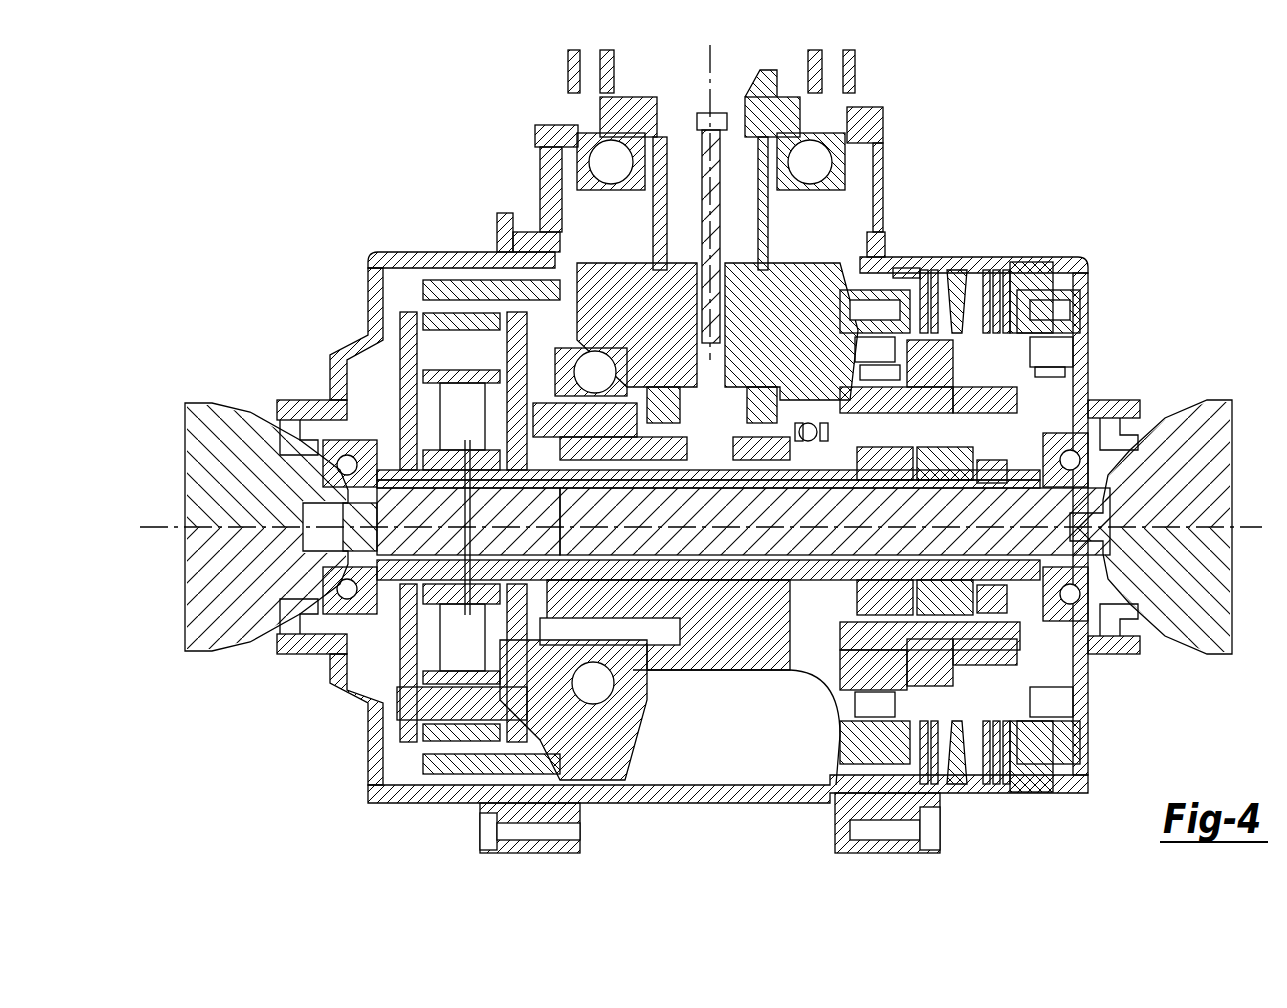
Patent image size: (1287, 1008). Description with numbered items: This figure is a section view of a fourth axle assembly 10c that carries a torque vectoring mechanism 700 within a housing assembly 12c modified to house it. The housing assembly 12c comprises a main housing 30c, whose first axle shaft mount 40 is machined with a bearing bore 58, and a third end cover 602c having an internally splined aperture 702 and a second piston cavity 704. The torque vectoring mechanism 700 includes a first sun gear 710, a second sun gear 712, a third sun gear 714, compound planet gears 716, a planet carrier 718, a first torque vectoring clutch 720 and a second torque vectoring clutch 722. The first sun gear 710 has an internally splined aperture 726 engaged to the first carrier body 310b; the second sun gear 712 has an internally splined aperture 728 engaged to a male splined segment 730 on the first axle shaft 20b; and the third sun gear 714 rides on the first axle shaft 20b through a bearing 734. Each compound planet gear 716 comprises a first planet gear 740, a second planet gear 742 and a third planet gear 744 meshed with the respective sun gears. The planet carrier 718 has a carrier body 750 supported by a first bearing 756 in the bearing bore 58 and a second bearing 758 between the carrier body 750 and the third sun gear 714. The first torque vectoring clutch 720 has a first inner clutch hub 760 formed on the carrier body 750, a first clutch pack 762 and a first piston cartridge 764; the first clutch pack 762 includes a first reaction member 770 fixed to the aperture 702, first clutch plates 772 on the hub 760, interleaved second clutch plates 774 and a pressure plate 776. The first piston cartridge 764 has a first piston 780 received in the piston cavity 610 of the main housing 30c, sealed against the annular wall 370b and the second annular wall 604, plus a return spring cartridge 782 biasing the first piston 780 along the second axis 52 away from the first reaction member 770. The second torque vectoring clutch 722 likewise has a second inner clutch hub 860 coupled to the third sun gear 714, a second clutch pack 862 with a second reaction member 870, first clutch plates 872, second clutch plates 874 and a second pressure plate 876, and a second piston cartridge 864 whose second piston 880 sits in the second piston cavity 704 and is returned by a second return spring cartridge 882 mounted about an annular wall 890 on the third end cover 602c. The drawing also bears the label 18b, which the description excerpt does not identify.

The axle assembly 10c is at (266, 128).
The housing assembly 12c is at (578, 180).
The main housing 30c is at (575, 198).
The planetary gear set 18b is at (410, 308).
The first carrier body 310b is at (505, 445).
The second axis 52 is at (165, 527).
The first axle shaft 20b is at (1190, 628).
The third end cover 602c is at (1080, 405).
The bearing bore 58 is at (755, 365).
The first axle shaft mount 40 is at (770, 655).
The first torque vectoring clutch 720 is at (900, 278).
The first clutch pack 762 is at (938, 275).
The second clutch pack 862 is at (982, 278).
The torque vectoring mechanism 700 is at (1005, 275).
The second torque vectoring clutch 722 is at (1015, 285).
The internally splined aperture 702 is at (1040, 275).
The second piston 880 is at (1055, 300).
The second piston cartridge 864 is at (1088, 313).
The second piston cavity 704 is at (1090, 352).
The annular wall 890 is at (1050, 365).
The first piston 780 is at (852, 300).
The first piston cartridge 764 is at (855, 322).
The return spring cartridge 782 is at (860, 357).
The first clutch plates 772 is at (880, 375).
The first inner clutch hub 760 is at (930, 365).
The second inner clutch hub 860 is at (985, 400).
The first sun gear 710 is at (852, 393).
The carrier body 750 is at (860, 458).
The second sun gear 712 is at (955, 455).
The third sun gear 714 is at (990, 455).
The first bearing 756 is at (820, 438).
The planet carrier 718 is at (805, 462).
The internally splined aperture 726 is at (870, 470).
The internally splined aperture 728 is at (950, 478).
The bearing 734 is at (1050, 485).
The male splined segment 730 is at (940, 570).
The second bearing 758 is at (1020, 600).
The first planet gear 740 is at (930, 615).
The second planet gear 742 is at (942, 614).
The third planet gear 744 is at (989, 617).
The annular wall 370b is at (840, 675).
The compound planet gears 716 is at (835, 682).
The piston cavity 610 is at (850, 715).
The second annular wall 604 is at (852, 740).
The pressure plate 776 is at (860, 765).
The second clutch plates 774 is at (910, 790).
The first reaction member 770 is at (940, 790).
The second reaction member 870 is at (950, 775).
The second clutch plates 874 is at (985, 770).
The second pressure plate 876 is at (1000, 760).
The first clutch plates 872 is at (990, 700).
The second return spring cartridge 882 is at (1070, 695).